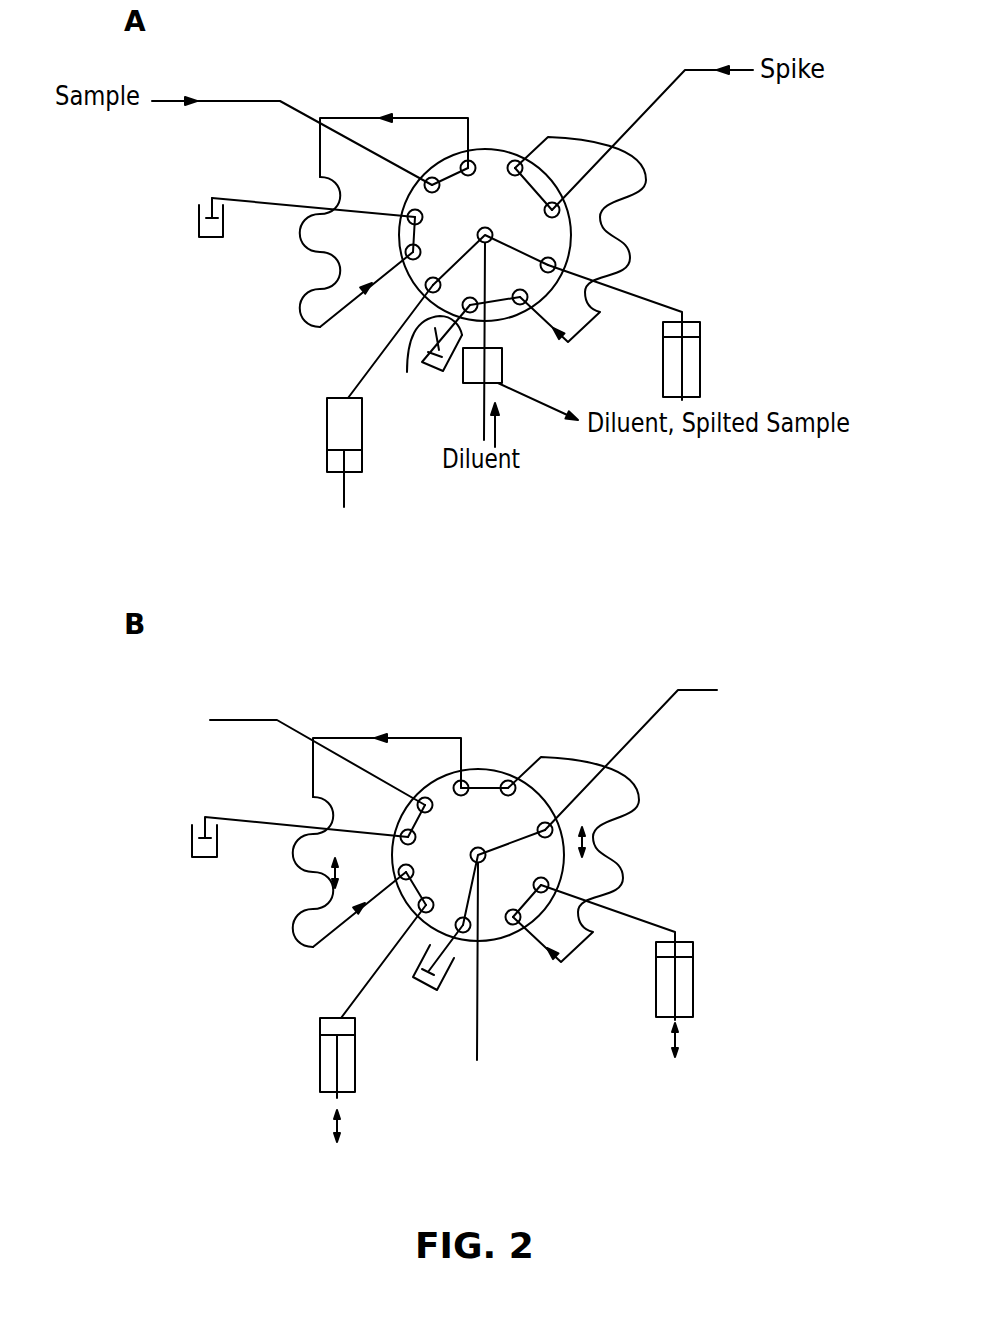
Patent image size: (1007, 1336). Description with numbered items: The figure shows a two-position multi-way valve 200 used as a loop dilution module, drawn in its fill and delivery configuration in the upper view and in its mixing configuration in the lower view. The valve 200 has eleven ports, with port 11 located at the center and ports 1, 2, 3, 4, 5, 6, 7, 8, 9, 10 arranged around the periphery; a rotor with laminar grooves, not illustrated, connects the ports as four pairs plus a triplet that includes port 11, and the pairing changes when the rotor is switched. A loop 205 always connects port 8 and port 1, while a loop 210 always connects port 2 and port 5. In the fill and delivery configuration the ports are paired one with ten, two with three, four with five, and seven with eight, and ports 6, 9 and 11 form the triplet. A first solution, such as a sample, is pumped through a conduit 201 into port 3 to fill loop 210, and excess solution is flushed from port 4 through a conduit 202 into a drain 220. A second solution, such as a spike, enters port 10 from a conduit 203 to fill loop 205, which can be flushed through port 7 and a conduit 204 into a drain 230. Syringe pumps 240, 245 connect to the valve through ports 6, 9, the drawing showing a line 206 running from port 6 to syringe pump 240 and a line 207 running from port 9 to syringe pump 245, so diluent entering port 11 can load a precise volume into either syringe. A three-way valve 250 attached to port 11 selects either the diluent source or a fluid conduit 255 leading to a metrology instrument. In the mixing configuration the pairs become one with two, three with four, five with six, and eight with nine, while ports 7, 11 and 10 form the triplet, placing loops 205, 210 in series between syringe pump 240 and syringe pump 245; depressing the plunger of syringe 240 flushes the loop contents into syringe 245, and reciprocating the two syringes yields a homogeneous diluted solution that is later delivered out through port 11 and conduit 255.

In FIG. 2a, the two-position multi-way valve 200 is at (525, 113).
In FIG. 2b, the two-position multi-way valve 200 is at (500, 750).
In FIG. 2a, the conduit 201 is at (247, 100).
In FIG. 2b, the conduit 201 is at (240, 720).
In FIG. 2a, the conduit 202 is at (253, 197).
In FIG. 2a, the conduit 203 is at (678, 74).
In FIG. 2b, the conduit 203 is at (670, 696).
In FIG. 2a, the conduit 204 is at (407, 372).
In FIG. 2a, the loop 205 is at (632, 243).
In FIG. 2b, the loop 205 is at (292, 863).
In FIG. 2a, the line to syringe pump 206 is at (362, 372).
In FIG. 2b, the line to syringe pump 206 is at (355, 993).
In FIG. 2a, the line to syringe pump 207 is at (658, 302).
In FIG. 2b, the line to syringe pump 207 is at (652, 922).
In FIG. 2a, the loop 210 is at (297, 243).
In FIG. 2b, the loop 210 is at (625, 860).
In FIG. 2a, the drain 220 is at (197, 223).
In FIG. 2a, the drain 230 is at (440, 374).
In FIG. 2a, the syringe pump 240 is at (363, 463).
In FIG. 2b, the syringe pump 240 is at (318, 1050).
In FIG. 2a, the syringe pump 245 is at (702, 365).
In FIG. 2b, the syringe pump 245 is at (695, 985).
In FIG. 2a, the three-way valve 250 is at (503, 362).
In FIG. 2a, the fluid conduit 255 is at (548, 408).
In FIG. 2a, the port 1 is at (512, 179).
In FIG. 2b, the port 1 is at (505, 799).
In FIG. 2a, the port 2 is at (475, 179).
In FIG. 2b, the port 2 is at (468, 799).
In FIG. 2a, the port 3 is at (441, 193).
In FIG. 2b, the port 3 is at (434, 813).
In FIG. 2a, the port 4 is at (423, 216).
In FIG. 2b, the port 4 is at (416, 836).
In FIG. 2a, the port 5 is at (423, 253).
In FIG. 2b, the port 5 is at (416, 873).
In FIG. 2a, the port 6 is at (441, 285).
In FIG. 2b, the port 6 is at (434, 905).
In FIG. 2a, the port 7 is at (470, 288).
In FIG. 2b, the port 7 is at (463, 908).
In FIG. 2a, the port 8 is at (514, 288).
In FIG. 2b, the port 8 is at (507, 908).
In FIG. 2a, the port 9 is at (544, 253).
In FIG. 2b, the port 9 is at (537, 873).
In FIG. 2a, the port 10 is at (536, 213).
In FIG. 2b, the port 10 is at (529, 833).
In FIG. 2a, the port 11 is at (481, 222).
In FIG. 2b, the port 11 is at (474, 842).